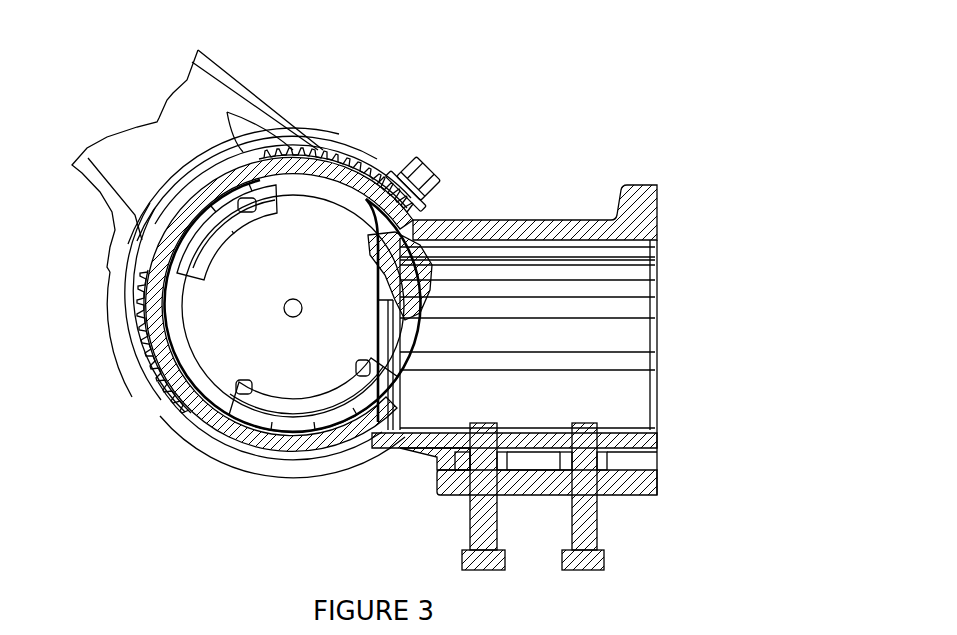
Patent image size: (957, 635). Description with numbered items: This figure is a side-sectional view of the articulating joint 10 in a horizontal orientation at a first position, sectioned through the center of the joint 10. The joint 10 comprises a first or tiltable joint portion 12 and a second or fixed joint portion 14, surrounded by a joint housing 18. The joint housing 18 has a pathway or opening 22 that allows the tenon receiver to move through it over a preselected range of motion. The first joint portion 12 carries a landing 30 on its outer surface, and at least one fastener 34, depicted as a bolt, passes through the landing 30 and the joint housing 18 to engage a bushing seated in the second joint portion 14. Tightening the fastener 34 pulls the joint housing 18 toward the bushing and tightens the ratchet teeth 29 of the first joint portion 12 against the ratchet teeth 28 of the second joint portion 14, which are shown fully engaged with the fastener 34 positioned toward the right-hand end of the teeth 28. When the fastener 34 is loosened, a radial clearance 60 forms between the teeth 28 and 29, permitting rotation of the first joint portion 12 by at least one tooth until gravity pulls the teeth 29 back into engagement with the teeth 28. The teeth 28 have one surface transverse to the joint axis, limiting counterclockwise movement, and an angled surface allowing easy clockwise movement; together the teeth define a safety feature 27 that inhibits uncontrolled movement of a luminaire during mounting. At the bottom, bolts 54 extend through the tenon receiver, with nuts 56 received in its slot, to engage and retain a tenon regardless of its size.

The joint 10 is at (481, 74).
The first joint portion 12 is at (158, 102).
The second joint portion 14 is at (543, 204).
The joint housing 18 is at (293, 133).
The opening 22 is at (138, 370).
The safety feature 27 is at (458, 197).
The ratchet teeth 28 is at (332, 172).
The ratchet teeth 29 is at (433, 170).
The landing 30 is at (400, 192).
The fastener 34 is at (440, 163).
The bolts 54 is at (472, 522).
The nuts 56 is at (563, 477).
The clearance 60 is at (132, 297).